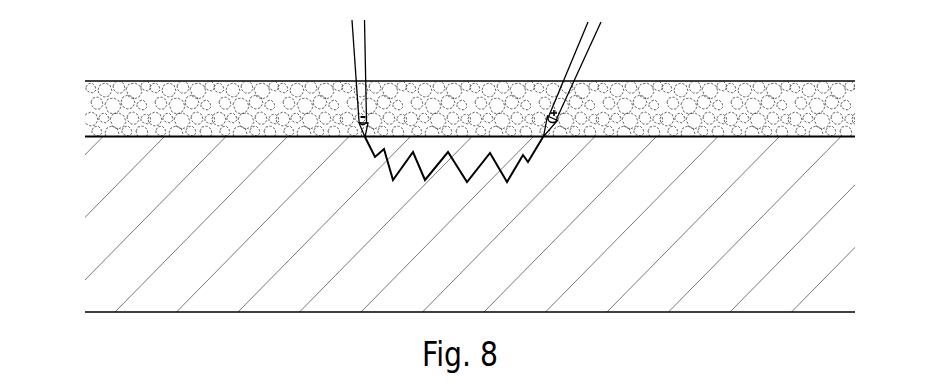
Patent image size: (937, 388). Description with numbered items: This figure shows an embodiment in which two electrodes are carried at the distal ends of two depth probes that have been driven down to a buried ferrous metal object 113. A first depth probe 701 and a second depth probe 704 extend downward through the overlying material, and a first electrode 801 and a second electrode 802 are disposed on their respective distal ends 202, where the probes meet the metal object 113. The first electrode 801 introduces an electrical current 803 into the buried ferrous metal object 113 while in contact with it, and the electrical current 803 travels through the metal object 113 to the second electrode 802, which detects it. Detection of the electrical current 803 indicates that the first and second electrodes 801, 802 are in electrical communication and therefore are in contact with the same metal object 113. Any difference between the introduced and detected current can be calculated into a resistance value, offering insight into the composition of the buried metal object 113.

The buried ferrous metal object 113 is at (766, 137).
The distal ends 202 is at (338, 131).
The first depth probe 701 is at (330, 25).
The second depth probe 704 is at (620, 30).
The first electrode 801 is at (335, 111).
The second electrode 802 is at (575, 115).
The electrical current 803 is at (450, 192).